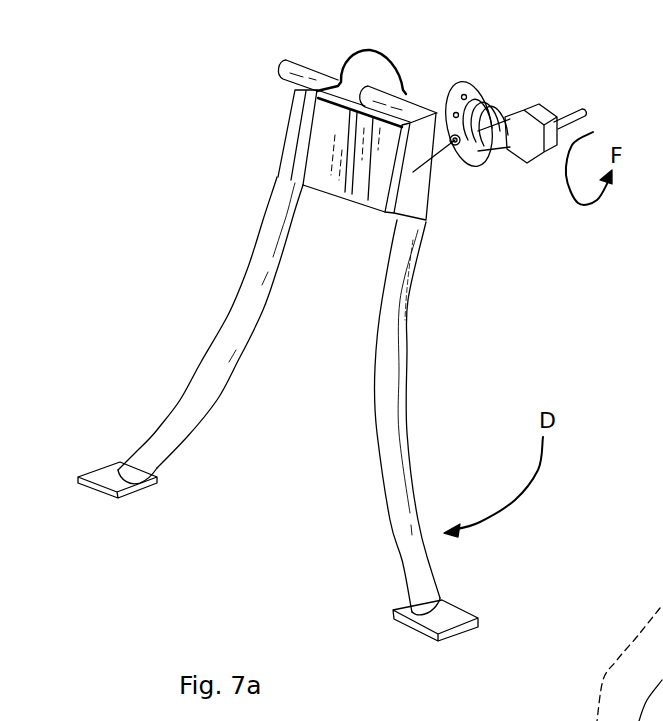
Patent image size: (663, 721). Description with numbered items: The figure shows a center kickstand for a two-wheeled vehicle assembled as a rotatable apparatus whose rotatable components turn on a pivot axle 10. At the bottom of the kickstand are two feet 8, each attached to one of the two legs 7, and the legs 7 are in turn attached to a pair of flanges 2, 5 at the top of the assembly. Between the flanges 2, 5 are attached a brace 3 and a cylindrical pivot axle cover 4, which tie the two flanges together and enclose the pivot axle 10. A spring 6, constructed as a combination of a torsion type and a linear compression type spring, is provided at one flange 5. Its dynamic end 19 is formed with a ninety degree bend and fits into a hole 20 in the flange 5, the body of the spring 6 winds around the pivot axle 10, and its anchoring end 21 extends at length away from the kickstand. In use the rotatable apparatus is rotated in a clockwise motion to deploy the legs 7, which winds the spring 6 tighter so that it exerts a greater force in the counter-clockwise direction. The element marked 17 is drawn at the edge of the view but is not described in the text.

The flange 2 is at (380, 62).
The brace 3 is at (352, 195).
The pivot axle cover 4 is at (405, 98).
The flange 5 is at (478, 92).
The spring 6 is at (485, 150).
The legs 7 is at (265, 300).
The feet 8 is at (78, 477).
The pivot axle 10 is at (280, 73).
The wheel 17 is at (630, 664).
The dynamic end 19 is at (456, 158).
The hole 20 is at (456, 90).
The anchoring end 21 is at (583, 113).